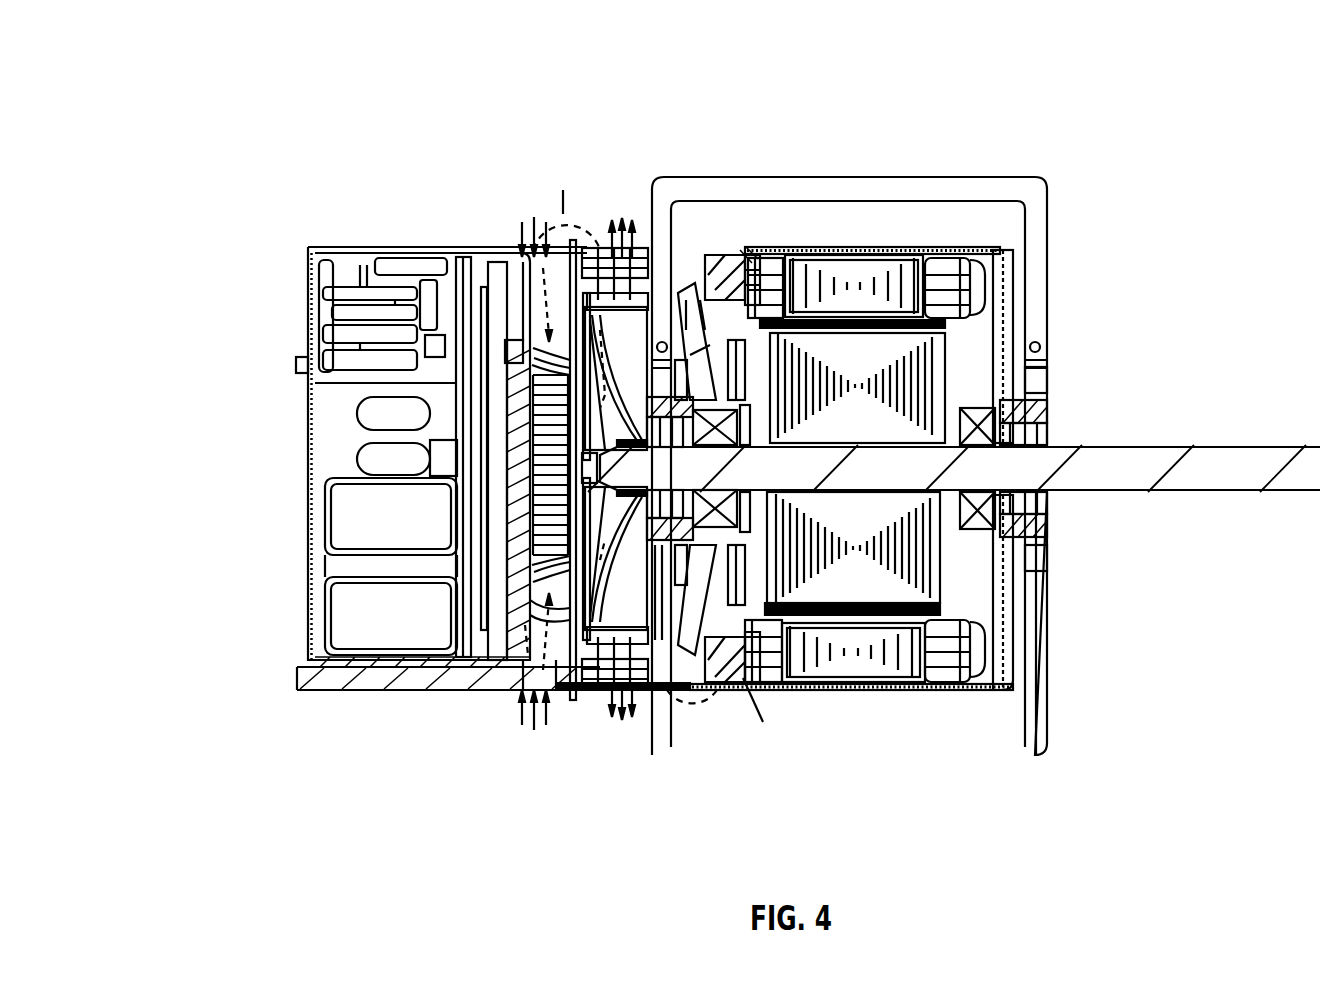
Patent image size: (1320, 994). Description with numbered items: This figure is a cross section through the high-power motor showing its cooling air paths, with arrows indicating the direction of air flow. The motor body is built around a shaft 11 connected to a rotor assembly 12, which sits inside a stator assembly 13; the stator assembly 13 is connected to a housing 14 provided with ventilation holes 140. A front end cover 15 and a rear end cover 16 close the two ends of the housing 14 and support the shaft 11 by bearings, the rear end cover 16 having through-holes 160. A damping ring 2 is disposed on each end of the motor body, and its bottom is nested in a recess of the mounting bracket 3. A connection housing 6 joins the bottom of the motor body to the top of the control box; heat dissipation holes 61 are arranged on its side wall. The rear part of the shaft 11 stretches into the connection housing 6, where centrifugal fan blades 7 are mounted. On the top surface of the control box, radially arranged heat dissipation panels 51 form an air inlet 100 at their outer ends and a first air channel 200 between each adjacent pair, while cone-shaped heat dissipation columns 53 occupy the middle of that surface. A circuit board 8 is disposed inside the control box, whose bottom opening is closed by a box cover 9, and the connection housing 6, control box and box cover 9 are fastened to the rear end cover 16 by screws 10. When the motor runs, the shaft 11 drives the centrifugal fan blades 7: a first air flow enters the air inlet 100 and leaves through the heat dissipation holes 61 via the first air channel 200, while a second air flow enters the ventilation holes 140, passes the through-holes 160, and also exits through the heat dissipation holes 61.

The damping ring 2 is at (1040, 385).
The mounting bracket 3 is at (1017, 757).
The connection housing 6 is at (563, 560).
The centrifugal fan blade 7 is at (672, 505).
The circuit board 8 is at (455, 516).
The box cover 9 is at (307, 483).
The screws 10 is at (303, 687).
The shaft 11 is at (1085, 472).
The rotor assembly 12 is at (885, 385).
The stator assembly 13 is at (885, 290).
The housing 14 is at (810, 253).
The front end cover 15 is at (1013, 592).
The rear end cover 16 is at (747, 680).
The heat dissipation panel 51 is at (545, 365).
The cone-shaped heat dissipation column 53 is at (553, 455).
The heat dissipation hole 61 is at (590, 628).
The air inlet 100 is at (523, 692).
The ventilation hole 140 is at (746, 255).
The through-hole 160 is at (718, 395).
The first air channel 200 is at (545, 595).